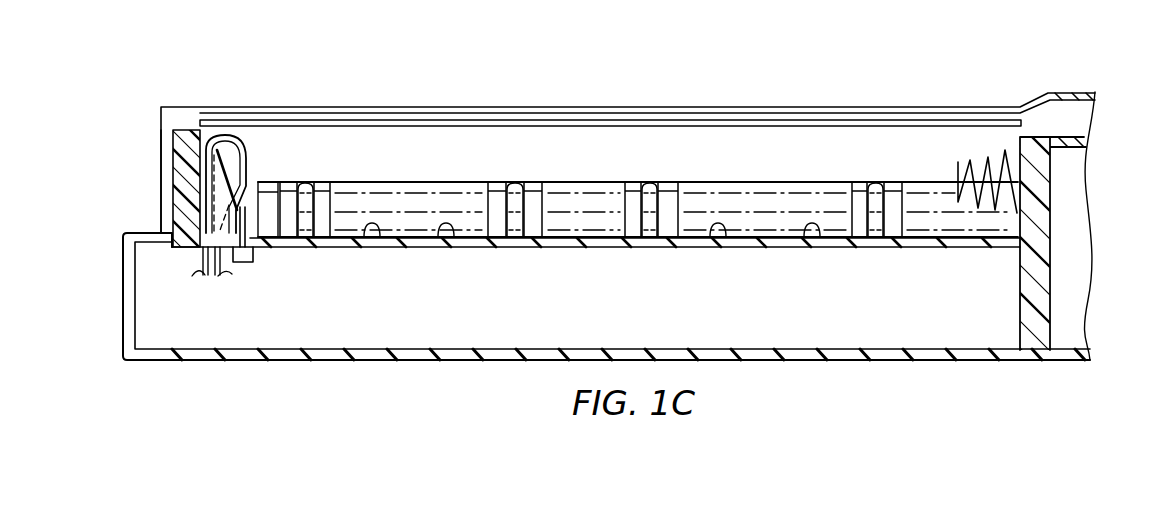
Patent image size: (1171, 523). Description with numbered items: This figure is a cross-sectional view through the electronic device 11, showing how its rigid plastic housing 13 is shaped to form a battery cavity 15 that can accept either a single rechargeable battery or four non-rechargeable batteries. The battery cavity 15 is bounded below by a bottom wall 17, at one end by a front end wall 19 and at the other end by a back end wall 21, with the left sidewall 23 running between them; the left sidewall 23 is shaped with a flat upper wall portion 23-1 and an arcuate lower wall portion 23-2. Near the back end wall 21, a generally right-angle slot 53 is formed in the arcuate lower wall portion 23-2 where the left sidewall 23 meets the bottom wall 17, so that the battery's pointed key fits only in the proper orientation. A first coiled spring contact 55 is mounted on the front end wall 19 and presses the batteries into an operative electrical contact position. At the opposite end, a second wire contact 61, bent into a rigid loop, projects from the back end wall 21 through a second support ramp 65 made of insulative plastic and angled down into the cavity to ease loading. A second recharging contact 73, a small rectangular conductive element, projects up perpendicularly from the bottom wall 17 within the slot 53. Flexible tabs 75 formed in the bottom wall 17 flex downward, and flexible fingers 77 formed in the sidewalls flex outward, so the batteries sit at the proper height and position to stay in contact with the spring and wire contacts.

The electronic device 11 is at (201, 389).
The housing 13 is at (918, 360).
The battery cavity 15 is at (402, 163).
The bottom wall 17 is at (565, 241).
The front end wall 19 is at (1028, 223).
The back end wall 21 is at (121, 181).
The left sidewall 23 is at (870, 156).
The flat upper wall portion 23-1 is at (583, 160).
The arcuate lower wall portion 23-2 is at (758, 198).
The slot 53 is at (252, 203).
The first coiled spring contact 55 is at (986, 157).
The second wire contact 61 is at (218, 137).
The second support ramp 65 is at (146, 188).
The second recharging contact 73 is at (248, 252).
The flexible tabs 75 is at (446, 234).
The flexible fingers 77 is at (305, 192).